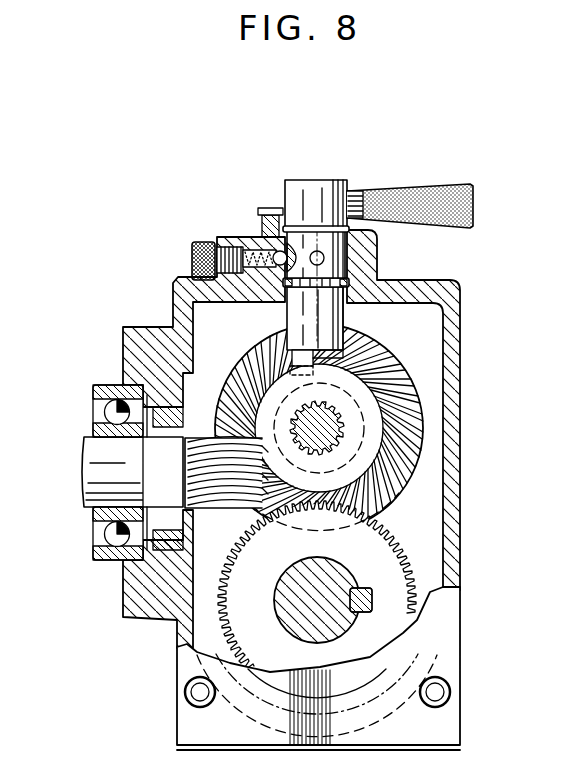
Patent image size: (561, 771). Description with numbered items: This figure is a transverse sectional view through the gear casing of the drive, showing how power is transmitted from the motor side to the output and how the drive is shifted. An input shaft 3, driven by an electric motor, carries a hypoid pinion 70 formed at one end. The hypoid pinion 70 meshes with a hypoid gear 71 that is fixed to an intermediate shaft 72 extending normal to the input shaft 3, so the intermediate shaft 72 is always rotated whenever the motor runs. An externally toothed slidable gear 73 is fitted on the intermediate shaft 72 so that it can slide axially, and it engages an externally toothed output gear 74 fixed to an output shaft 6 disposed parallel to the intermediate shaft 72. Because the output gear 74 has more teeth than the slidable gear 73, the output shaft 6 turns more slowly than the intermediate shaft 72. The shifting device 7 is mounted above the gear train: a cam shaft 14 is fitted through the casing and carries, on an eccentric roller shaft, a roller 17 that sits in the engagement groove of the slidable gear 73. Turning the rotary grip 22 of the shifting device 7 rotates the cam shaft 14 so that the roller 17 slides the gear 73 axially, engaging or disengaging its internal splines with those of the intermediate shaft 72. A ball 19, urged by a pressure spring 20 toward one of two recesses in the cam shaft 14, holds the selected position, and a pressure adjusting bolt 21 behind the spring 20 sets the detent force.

The input shaft 3 is at (84, 437).
The output shaft 6 is at (290, 596).
The shifting device 7 is at (317, 176).
The cam shaft 14 is at (295, 183).
The roller 17 is at (263, 362).
The ball 19 is at (279, 252).
The pressure spring 20 is at (262, 251).
The pressure adjusting bolt 21 is at (190, 262).
The rotary grip 22 is at (434, 190).
The hypoid pinion 70 is at (236, 496).
The hypoid gear 71 is at (270, 343).
The intermediate shaft 72 is at (333, 448).
The externally toothed slidable gear 73 is at (367, 367).
The externally toothed output gear 74 is at (427, 548).